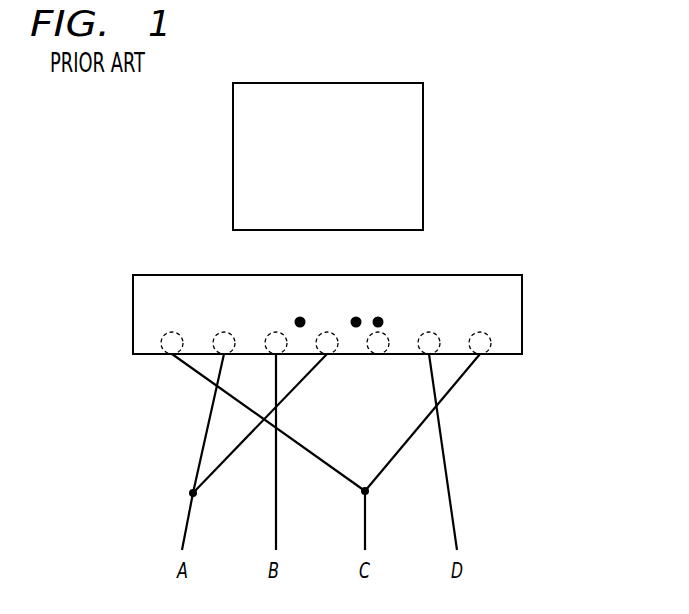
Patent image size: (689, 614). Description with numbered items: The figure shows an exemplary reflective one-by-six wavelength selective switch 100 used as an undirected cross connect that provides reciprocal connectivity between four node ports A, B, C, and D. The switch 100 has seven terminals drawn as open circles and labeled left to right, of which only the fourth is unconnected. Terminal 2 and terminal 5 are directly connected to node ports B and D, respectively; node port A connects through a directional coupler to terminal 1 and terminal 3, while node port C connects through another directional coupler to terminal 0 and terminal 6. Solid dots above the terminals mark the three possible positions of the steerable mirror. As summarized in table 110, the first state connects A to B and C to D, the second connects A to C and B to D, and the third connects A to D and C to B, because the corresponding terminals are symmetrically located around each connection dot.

The 1×6 WSS switch 100 is at (363, 314).
The table 110 is at (423, 111).
The terminal 0 is at (167, 332).
The terminal 1 is at (219, 332).
The terminal 2 is at (270, 332).
The terminal 3 is at (322, 332).
The terminal 5 is at (423, 332).
The terminal 6 is at (475, 332).